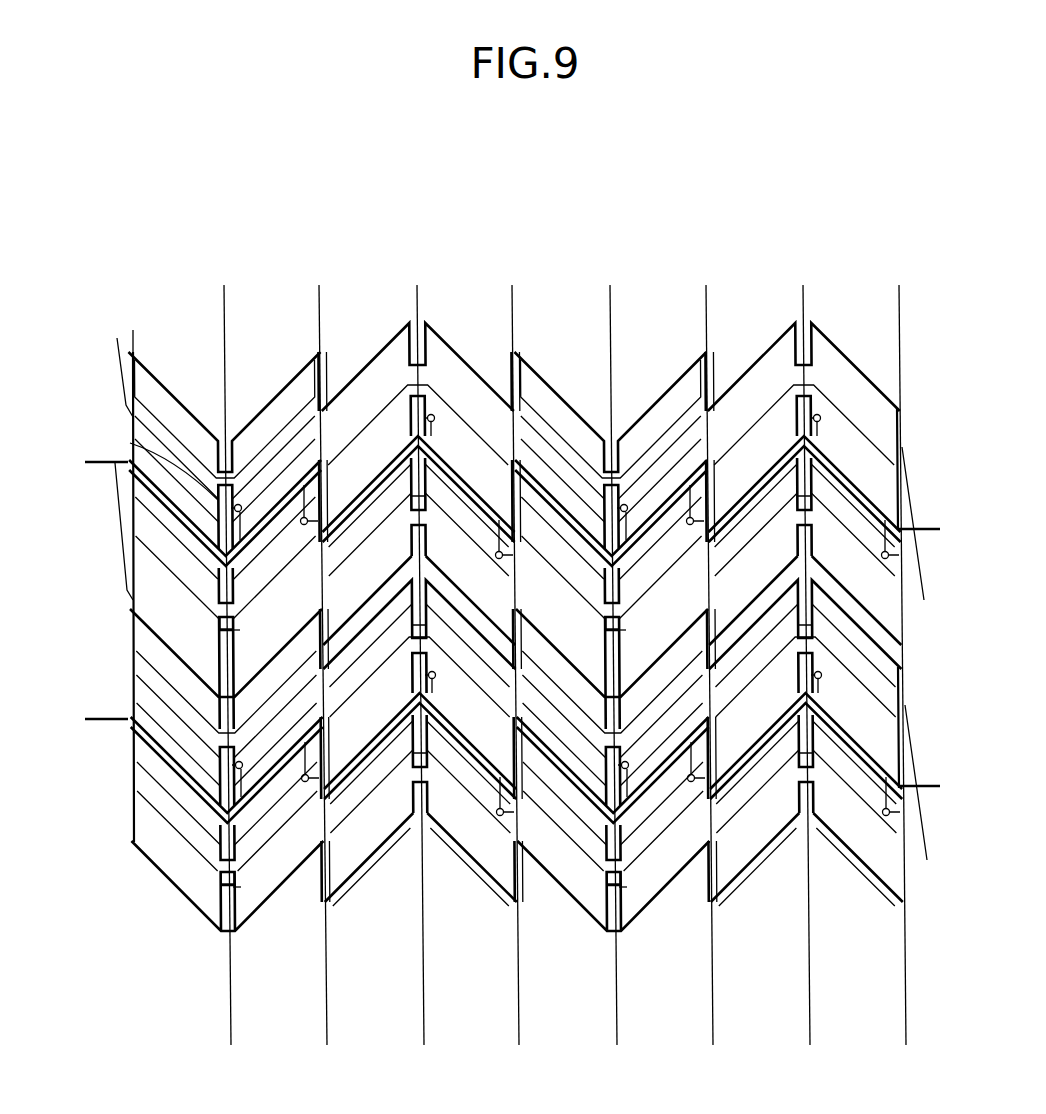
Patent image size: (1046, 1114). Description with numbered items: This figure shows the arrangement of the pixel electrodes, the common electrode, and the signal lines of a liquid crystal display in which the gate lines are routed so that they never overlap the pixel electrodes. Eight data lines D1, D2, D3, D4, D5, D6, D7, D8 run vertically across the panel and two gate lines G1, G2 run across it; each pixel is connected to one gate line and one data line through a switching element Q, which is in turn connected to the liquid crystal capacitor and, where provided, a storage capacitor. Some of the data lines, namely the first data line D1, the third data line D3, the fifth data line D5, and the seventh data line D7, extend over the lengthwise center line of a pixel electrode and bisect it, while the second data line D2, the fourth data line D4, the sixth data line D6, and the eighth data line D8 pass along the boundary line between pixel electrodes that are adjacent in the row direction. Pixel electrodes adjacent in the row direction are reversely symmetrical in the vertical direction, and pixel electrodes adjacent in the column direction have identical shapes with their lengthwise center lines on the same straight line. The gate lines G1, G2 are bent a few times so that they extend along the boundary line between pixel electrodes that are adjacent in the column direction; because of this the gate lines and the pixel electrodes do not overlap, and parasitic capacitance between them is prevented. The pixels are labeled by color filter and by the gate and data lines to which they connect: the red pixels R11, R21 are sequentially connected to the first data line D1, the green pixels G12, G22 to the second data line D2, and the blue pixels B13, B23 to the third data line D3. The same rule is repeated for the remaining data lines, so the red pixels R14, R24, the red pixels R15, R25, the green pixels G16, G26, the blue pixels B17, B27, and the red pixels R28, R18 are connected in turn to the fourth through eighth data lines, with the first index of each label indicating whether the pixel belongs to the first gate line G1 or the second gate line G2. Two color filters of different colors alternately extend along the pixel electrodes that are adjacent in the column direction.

The first data line D1 is at (224, 648).
The second data line D2 is at (320, 648).
The third data line D3 is at (418, 648).
The fourth data line D4 is at (513, 648).
The fifth data line D5 is at (610, 648).
The sixth data line D6 is at (707, 648).
The seventh data line D7 is at (805, 648).
The eighth data line D8 is at (900, 648).
The first gate line G1 is at (497, 489).
The second gate line G2 is at (497, 746).
The switching element Q is at (130, 443).
The red pixel R11 is at (274, 511).
The green pixel G12 is at (251, 630).
The blue pixel B13 is at (451, 429).
The red pixel R14 is at (472, 540).
The red pixel R15 is at (660, 511).
The green pixel G16 is at (637, 630).
The blue pixel B17 is at (837, 429).
The red pixel R18 is at (858, 540).
The red pixel R21 is at (275, 768).
The green pixel G22 is at (252, 886).
The blue pixel B23 is at (452, 686).
The red pixel R24 is at (473, 797).
The red pixel R25 is at (661, 768).
The green pixel G26 is at (638, 886).
The blue pixel B27 is at (838, 686).
The red pixel R28 is at (859, 797).